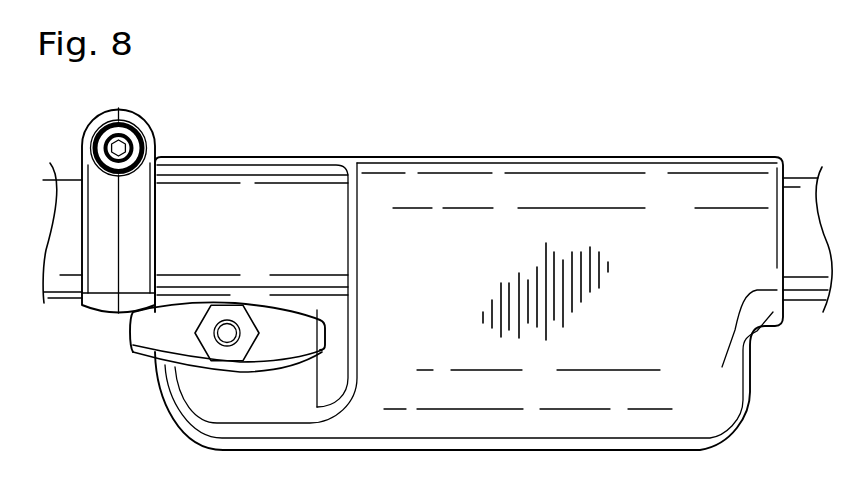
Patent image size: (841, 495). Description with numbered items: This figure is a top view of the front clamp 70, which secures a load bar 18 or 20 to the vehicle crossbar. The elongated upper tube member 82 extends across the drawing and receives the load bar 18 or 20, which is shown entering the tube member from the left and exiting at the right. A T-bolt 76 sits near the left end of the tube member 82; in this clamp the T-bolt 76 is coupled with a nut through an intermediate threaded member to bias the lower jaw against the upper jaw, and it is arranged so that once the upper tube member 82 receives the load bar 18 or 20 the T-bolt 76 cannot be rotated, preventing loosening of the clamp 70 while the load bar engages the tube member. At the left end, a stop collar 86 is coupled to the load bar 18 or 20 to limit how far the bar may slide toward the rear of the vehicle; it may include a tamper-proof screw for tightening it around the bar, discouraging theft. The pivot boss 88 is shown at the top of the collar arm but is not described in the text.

The front clamp 70 is at (661, 92).
The upper tube member 82 is at (510, 165).
The stop collar 86 is at (102, 188).
The pivot boss 88 is at (127, 135).
The T-bolt 76 is at (221, 353).
The load bar 18 is at (60, 300).
The load bar 20 is at (805, 175).